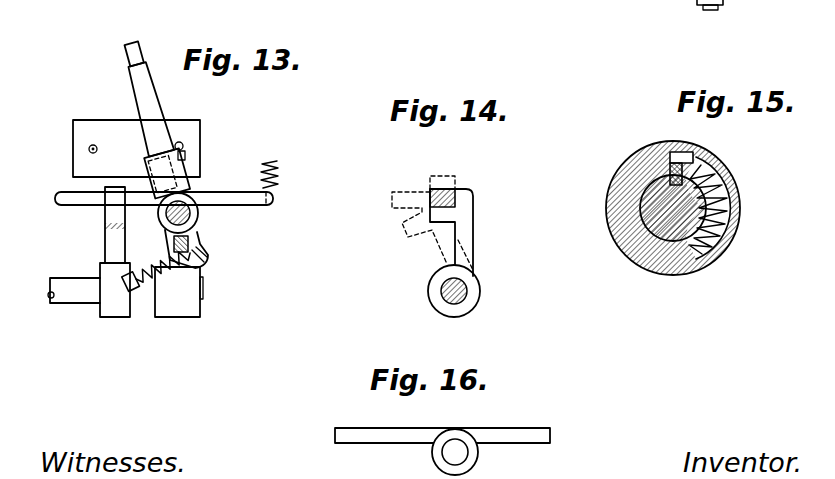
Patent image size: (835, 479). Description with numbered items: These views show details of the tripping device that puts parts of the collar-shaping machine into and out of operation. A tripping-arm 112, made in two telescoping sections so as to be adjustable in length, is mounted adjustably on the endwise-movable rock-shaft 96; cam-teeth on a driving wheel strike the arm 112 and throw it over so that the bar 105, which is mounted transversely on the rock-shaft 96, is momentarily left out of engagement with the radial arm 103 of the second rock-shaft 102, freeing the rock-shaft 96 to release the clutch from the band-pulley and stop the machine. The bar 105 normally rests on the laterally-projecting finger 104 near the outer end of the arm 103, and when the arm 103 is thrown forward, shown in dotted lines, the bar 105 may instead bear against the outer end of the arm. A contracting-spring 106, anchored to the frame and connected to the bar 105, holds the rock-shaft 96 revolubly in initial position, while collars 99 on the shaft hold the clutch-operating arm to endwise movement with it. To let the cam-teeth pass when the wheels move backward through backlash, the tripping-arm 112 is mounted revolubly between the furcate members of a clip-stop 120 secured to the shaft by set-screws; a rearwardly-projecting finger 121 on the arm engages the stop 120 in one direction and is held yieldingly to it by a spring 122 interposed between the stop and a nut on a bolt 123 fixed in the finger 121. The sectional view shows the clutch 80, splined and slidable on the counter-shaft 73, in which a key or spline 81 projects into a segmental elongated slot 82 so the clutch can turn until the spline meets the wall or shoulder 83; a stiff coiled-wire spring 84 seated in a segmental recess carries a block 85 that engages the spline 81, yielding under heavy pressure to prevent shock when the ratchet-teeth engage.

In FIG. 13, the tripping-arm 112 is at (138, 91).
In FIG. 13, the bar 105 is at (65, 193).
In FIG. 14, the bar 105 is at (456, 168).
In FIG. 16, the bar 105 is at (495, 428).
In FIG. 13, the laterally-projecting finger 104 is at (105, 215).
In FIG. 14, the laterally-projecting finger 104 is at (442, 216).
In FIG. 13, the radial arm 103 is at (105, 247).
In FIG. 14, the radial arm 103 is at (473, 237).
In FIG. 13, the rock-shaft 102 is at (84, 294).
In FIG. 14, the rock-shaft 102 is at (466, 291).
In FIG. 13, the rock-shaft 96 is at (192, 214).
In FIG. 13, the clip-stop 120 is at (173, 243).
In FIG. 13, the rearwardly-projecting finger 121 is at (204, 250).
In FIG. 13, the spring 122 is at (166, 272).
In FIG. 13, the bolt 123 is at (152, 286).
In FIG. 13, the contracting-spring 106 is at (280, 165).
In FIG. 15, the clutch 80 is at (623, 184).
In FIG. 15, the key or spline 81 is at (668, 160).
In FIG. 15, the segmental elongated slot 82 is at (708, 178).
In FIG. 15, the wall or shoulder 83 is at (720, 190).
In FIG. 15, the coiled-wire spring 84 is at (722, 214).
In FIG. 15, the block 85 is at (684, 153).
In FIG. 15, the counter-shaft 73 is at (655, 232).
In FIG. 15, the collar 99 is at (722, 6).